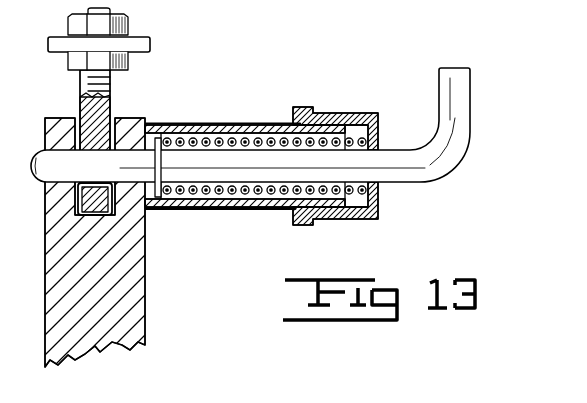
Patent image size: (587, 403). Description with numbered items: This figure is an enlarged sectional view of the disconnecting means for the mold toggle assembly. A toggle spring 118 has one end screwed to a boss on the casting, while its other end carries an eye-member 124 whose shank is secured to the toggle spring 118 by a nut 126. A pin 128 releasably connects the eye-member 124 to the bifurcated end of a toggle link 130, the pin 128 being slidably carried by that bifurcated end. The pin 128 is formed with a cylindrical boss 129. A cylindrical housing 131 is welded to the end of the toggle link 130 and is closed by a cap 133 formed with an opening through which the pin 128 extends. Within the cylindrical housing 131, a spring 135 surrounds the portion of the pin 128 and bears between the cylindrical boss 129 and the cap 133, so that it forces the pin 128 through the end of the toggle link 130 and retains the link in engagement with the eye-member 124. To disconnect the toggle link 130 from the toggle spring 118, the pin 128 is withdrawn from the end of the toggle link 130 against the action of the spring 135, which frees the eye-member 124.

The toggle spring 118 is at (150, 46).
The eye-member 124 is at (112, 118).
The nut 126 is at (128, 26).
The pin 128 is at (468, 90).
The cylindrical boss 129 is at (184, 126).
The toggle link 130 is at (134, 305).
The cylindrical housing 131 is at (250, 125).
The cap 133 is at (328, 108).
The spring 135 is at (268, 208).